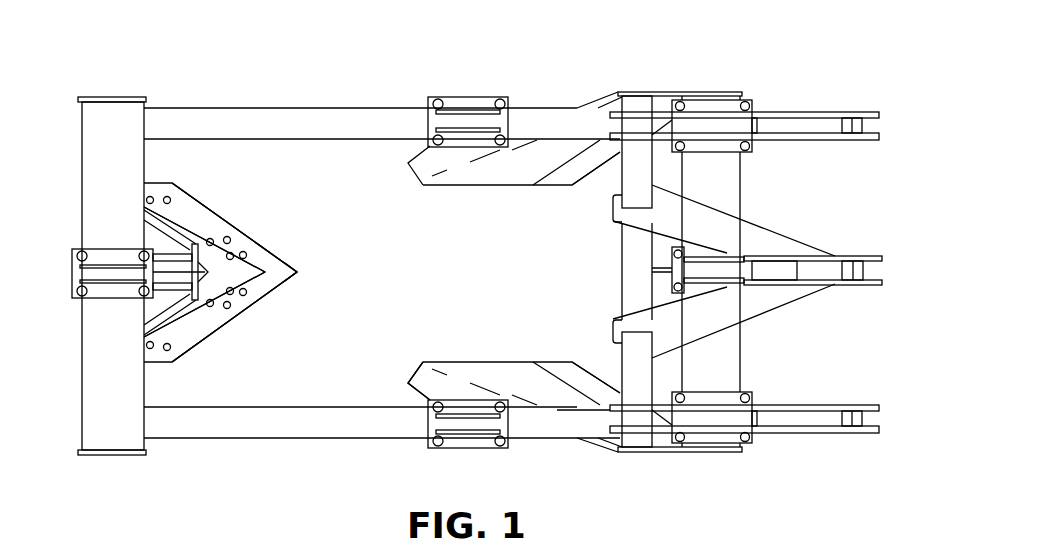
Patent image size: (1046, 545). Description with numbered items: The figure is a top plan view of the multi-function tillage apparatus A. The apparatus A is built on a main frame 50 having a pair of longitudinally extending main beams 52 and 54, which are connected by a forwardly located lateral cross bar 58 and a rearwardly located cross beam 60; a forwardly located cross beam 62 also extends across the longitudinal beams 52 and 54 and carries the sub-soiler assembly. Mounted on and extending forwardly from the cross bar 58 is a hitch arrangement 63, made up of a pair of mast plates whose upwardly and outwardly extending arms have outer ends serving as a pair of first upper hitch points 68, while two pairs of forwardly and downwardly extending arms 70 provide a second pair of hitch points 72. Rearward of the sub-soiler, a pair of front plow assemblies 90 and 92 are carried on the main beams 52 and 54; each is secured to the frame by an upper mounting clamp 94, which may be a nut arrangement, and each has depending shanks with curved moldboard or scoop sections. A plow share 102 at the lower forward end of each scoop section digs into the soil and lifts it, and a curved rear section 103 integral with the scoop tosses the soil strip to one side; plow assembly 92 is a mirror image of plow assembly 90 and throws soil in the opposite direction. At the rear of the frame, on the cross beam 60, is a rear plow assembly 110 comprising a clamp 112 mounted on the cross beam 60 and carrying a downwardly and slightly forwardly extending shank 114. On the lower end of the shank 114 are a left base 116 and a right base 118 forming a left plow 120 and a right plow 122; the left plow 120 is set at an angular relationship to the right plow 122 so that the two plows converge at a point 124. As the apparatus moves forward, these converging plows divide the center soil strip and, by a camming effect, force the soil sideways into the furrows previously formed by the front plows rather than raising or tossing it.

The tillage apparatus A is at (731, 44).
The main frame 50 is at (293, 453).
The main beam 52 is at (317, 406).
The main beam 54 is at (295, 106).
The lateral cross bar 58 is at (632, 288).
The cross beam 60 is at (103, 150).
The cross beam 62 is at (718, 372).
The hitch arrangement 63 is at (808, 226).
The first upper hitch points 68 is at (868, 271).
The forwardly and downwardly extending arms 70 is at (845, 112).
The hitch points 72 is at (868, 124).
The front plow assembly 90 is at (491, 351).
The front plow assembly 92 is at (502, 196).
The upper mounting clamp 94 is at (476, 97).
The plow share 102 is at (590, 162).
The curved rear section 103 is at (410, 382).
The rear plow assembly 110 is at (291, 229).
The clamp 112 is at (108, 258).
The shank 114 is at (177, 276).
The rear plow assembly left base 116 is at (184, 202).
The rear assembly right base 118 is at (207, 327).
The left plow 120 is at (215, 218).
The right plow 122 is at (257, 304).
The point 124 is at (299, 273).